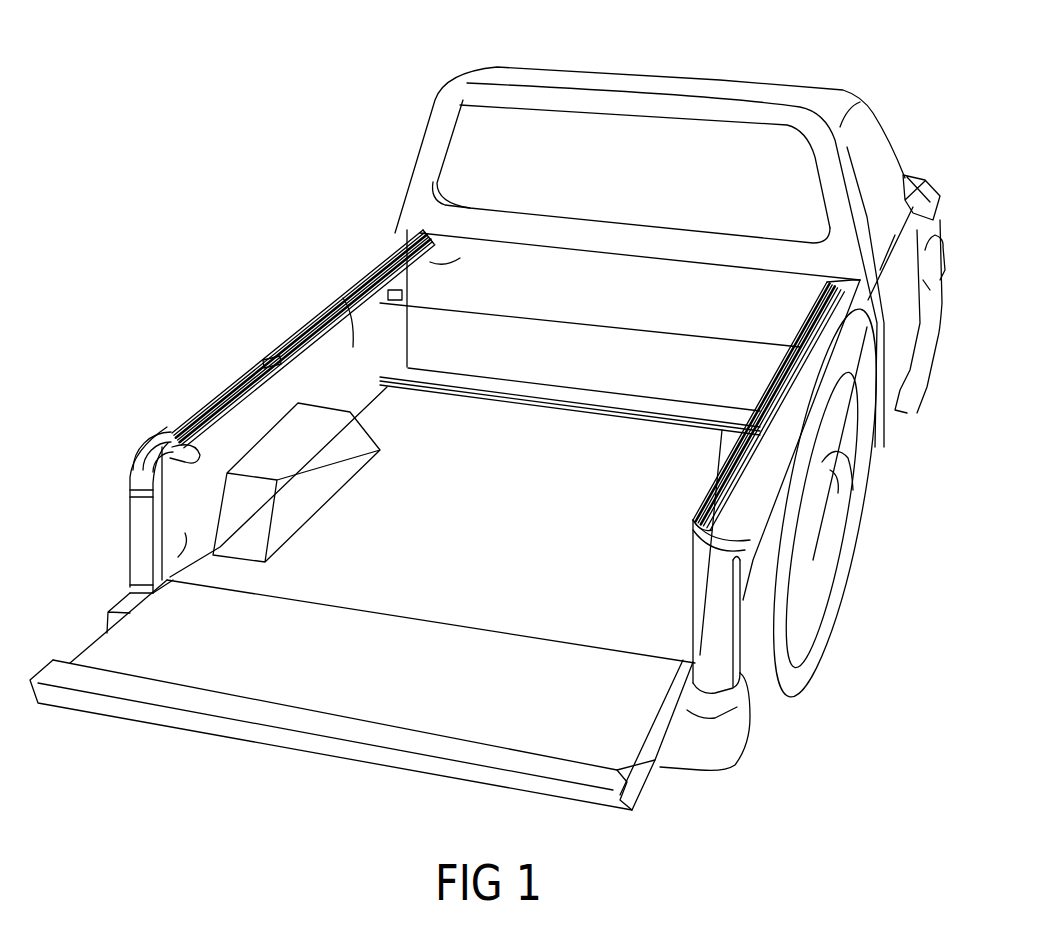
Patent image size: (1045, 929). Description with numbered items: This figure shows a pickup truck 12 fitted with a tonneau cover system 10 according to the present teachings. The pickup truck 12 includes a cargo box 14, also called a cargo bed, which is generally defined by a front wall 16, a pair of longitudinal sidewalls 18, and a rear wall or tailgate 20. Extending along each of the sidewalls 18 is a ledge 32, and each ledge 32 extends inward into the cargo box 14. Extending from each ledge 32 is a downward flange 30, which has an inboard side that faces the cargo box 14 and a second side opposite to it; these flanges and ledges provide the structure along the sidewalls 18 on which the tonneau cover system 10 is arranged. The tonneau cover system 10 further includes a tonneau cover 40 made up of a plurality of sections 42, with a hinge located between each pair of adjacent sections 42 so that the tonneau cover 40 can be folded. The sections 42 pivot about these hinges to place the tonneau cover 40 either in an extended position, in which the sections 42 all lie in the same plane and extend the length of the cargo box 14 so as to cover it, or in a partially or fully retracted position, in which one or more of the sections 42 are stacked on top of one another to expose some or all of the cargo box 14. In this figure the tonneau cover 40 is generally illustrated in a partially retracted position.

The tonneau cover system 10 is at (512, 352).
The pickup truck 12 is at (700, 78).
The cargo box 14 is at (477, 573).
The front wall 16 is at (400, 246).
The longitudinal sidewalls 18 is at (170, 563).
The tailgate 20 is at (157, 660).
The downward flange 30 is at (200, 428).
The ledge 32 is at (227, 387).
The tonneau cover 40 is at (765, 297).
The sections 42 is at (477, 267).